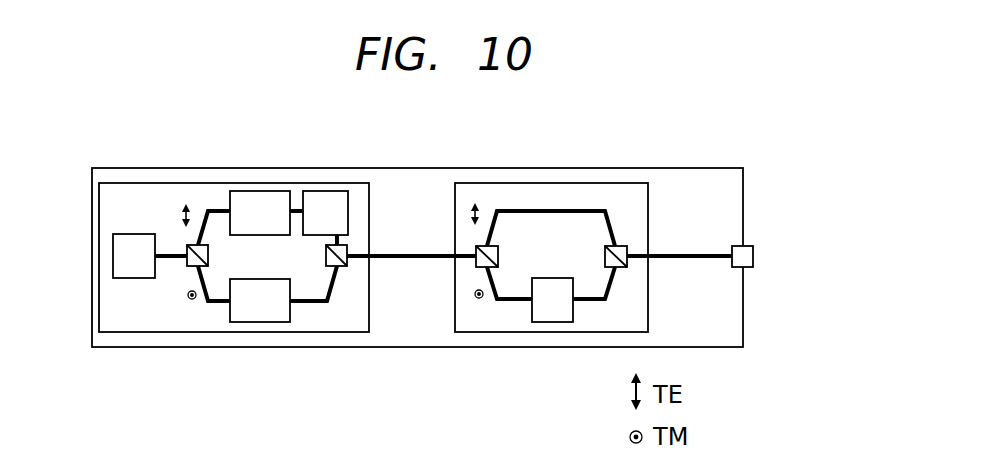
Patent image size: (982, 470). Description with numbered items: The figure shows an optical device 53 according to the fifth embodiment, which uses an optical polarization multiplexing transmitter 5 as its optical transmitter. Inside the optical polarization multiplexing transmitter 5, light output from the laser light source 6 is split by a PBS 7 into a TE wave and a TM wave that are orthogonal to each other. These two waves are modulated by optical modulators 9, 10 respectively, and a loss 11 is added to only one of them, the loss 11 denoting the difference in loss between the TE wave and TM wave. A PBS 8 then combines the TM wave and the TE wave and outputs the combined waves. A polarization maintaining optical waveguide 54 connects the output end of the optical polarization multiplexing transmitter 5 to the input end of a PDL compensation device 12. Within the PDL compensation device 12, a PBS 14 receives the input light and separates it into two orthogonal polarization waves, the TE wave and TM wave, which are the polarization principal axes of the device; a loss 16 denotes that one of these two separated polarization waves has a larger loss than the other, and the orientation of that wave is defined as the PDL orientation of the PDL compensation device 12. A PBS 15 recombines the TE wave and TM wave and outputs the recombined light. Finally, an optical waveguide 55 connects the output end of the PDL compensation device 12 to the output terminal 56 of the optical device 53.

The optical polarization multiplexing transmitter 5 is at (370, 313).
The laser light source 6 is at (141, 234).
The PBS 7 is at (190, 267).
The PBS 8 is at (343, 267).
The optical modulator 9 is at (278, 191).
The optical modulator 10 is at (240, 323).
The loss 11 is at (339, 191).
The PDL compensation device 12 is at (650, 304).
The PBS 14 is at (500, 248).
The PBS 15 is at (604, 261).
The loss 16 is at (532, 323).
The optical device 53 is at (745, 316).
The polarization maintaining optical waveguide 54 is at (405, 254).
The optical waveguide 55 is at (694, 253).
The output terminal 56 is at (751, 246).